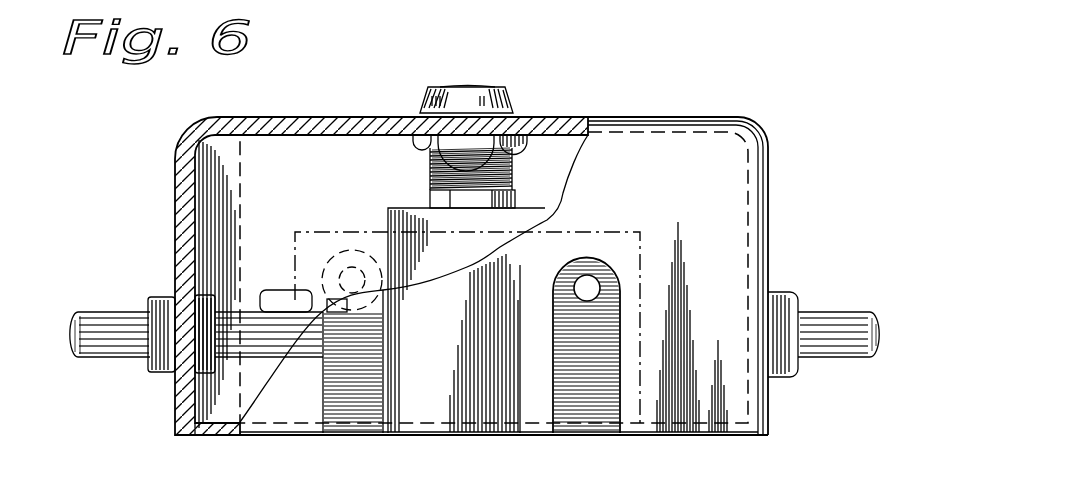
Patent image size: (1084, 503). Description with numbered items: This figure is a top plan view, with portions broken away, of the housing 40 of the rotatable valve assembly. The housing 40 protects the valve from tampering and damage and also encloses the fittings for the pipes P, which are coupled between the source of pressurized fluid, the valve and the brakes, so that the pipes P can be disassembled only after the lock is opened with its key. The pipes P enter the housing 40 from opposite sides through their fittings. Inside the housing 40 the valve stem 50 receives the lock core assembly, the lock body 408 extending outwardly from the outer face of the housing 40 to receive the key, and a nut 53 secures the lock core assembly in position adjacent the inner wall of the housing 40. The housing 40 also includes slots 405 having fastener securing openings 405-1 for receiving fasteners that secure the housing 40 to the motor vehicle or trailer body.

The housing 40 is at (753, 165).
The cap 408 is at (505, 100).
The nut 53 is at (533, 140).
The valve stem 50 is at (543, 210).
The bracket 405 is at (337, 417).
The fitting 405-1 is at (328, 268).
The pipes P is at (120, 360).